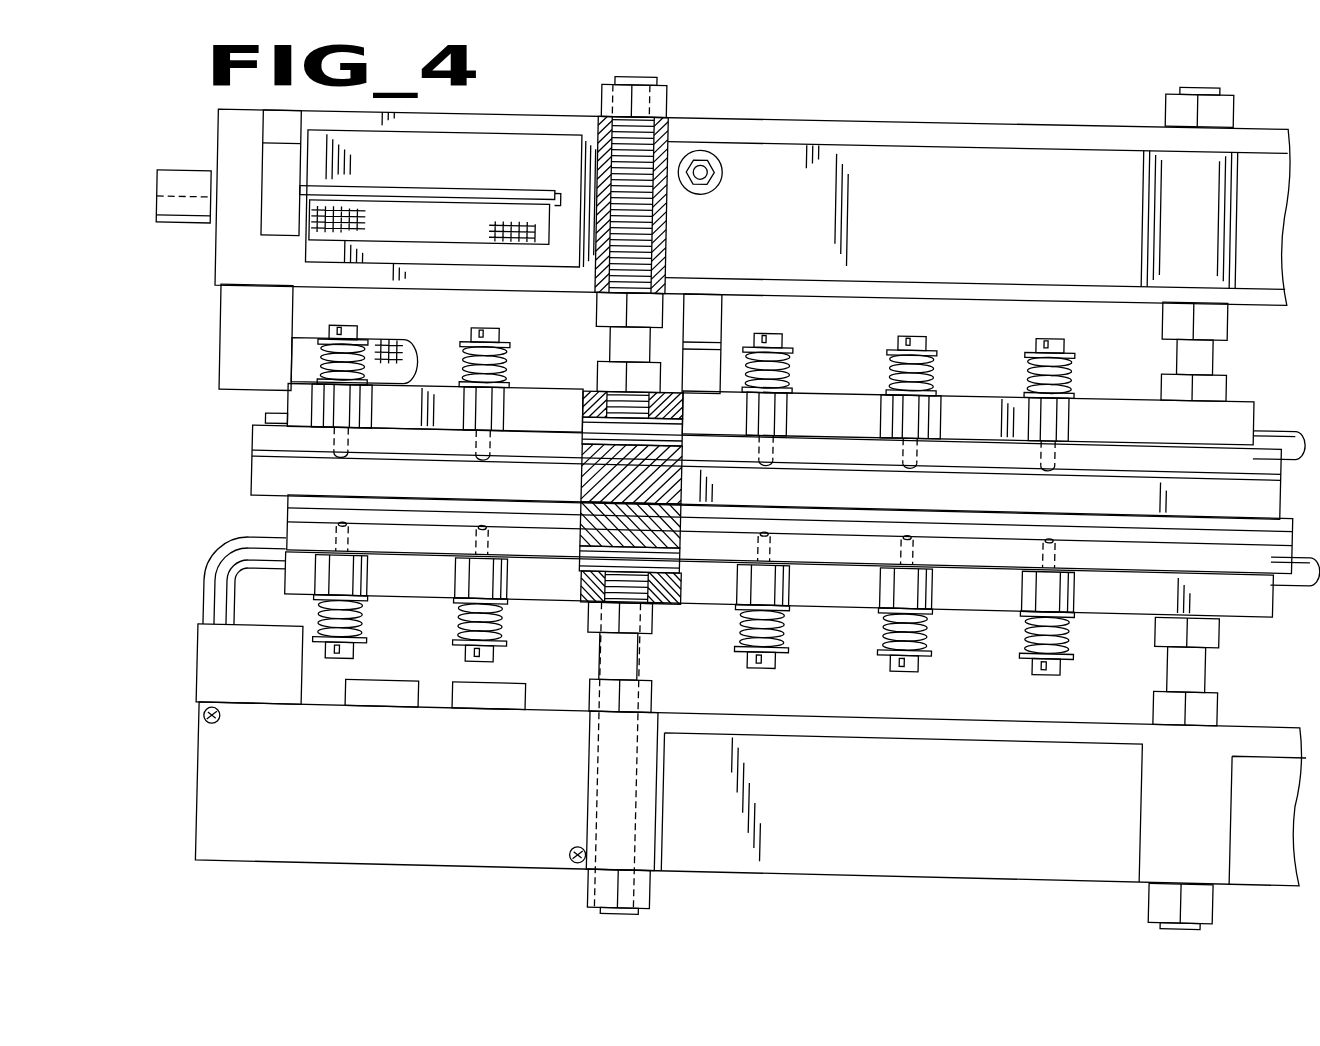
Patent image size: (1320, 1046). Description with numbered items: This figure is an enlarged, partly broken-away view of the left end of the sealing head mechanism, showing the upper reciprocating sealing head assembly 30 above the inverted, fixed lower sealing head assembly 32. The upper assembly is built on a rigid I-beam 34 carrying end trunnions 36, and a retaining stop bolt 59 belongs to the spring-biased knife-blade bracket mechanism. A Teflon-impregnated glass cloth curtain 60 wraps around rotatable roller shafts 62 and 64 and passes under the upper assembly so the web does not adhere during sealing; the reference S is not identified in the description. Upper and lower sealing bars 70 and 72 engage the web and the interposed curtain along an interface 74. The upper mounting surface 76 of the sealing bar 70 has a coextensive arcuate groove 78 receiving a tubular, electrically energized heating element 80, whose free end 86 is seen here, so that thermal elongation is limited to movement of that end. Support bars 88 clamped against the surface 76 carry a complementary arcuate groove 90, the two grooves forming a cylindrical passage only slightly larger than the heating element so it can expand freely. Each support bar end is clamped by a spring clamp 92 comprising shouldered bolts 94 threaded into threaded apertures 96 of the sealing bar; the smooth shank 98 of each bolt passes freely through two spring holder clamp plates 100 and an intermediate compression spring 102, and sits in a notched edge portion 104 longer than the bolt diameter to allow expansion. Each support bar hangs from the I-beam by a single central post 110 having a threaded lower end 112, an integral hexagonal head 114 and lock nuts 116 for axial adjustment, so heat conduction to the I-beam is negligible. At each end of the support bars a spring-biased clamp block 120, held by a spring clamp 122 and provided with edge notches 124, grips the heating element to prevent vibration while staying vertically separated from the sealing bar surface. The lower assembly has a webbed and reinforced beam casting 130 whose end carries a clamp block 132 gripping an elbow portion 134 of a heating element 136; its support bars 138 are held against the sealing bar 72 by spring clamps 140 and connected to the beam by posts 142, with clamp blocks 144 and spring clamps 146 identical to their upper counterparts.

The strip S is at (173, 118).
The reciprocating sealing head assembly 30 is at (182, 350).
The sealing head assembly 32 is at (189, 694).
The I-beam 34 is at (921, 129).
The end trunnions 36 is at (153, 231).
The retaining stop bolt 59 is at (719, 170).
The Teflon-impregnated glass cloth curtain 60 is at (392, 337).
The rotatable roller shaft 62 is at (444, 196).
The rotatable roller shaft 64 is at (289, 359).
The upper sealing bar 70 is at (254, 476).
The lower sealing bar 72 is at (290, 528).
The interface 74 is at (300, 500).
The upper or mounting surface 76 is at (766, 450).
The arcuate groove 78 is at (589, 441).
The heating element 80 is at (588, 426).
The free end 86 is at (266, 429).
The support bars 88 is at (843, 388).
The arcuate groove 90 is at (664, 427).
The spring clamp 92 is at (502, 335).
The shouldered bolts 94 is at (506, 390).
The threaded apertures 96 is at (505, 453).
The smooth shank 98 is at (498, 406).
The spring holder clamp plates 100 is at (462, 383).
The compression spring 102 is at (509, 355).
The notched edge portion 104 is at (473, 408).
The central post 110 is at (640, 211).
The threaded lower end 112 is at (648, 405).
The hexagonal head 114 is at (658, 379).
The lock nuts 116 is at (655, 94).
The spring biased clamp block 120 is at (298, 404).
The spring clamp 122 is at (316, 341).
The edge notches 124 is at (354, 430).
The beam casting 130 is at (915, 797).
The clamp block 132 is at (226, 668).
The elbow portion 134 is at (233, 569).
The heating element 136 is at (661, 557).
The support bars 138 is at (524, 603).
The spring clamps 140 is at (459, 651).
The posts 142 is at (606, 761).
The clamp blocks 144 is at (373, 566).
The spring clamps 146 is at (368, 643).